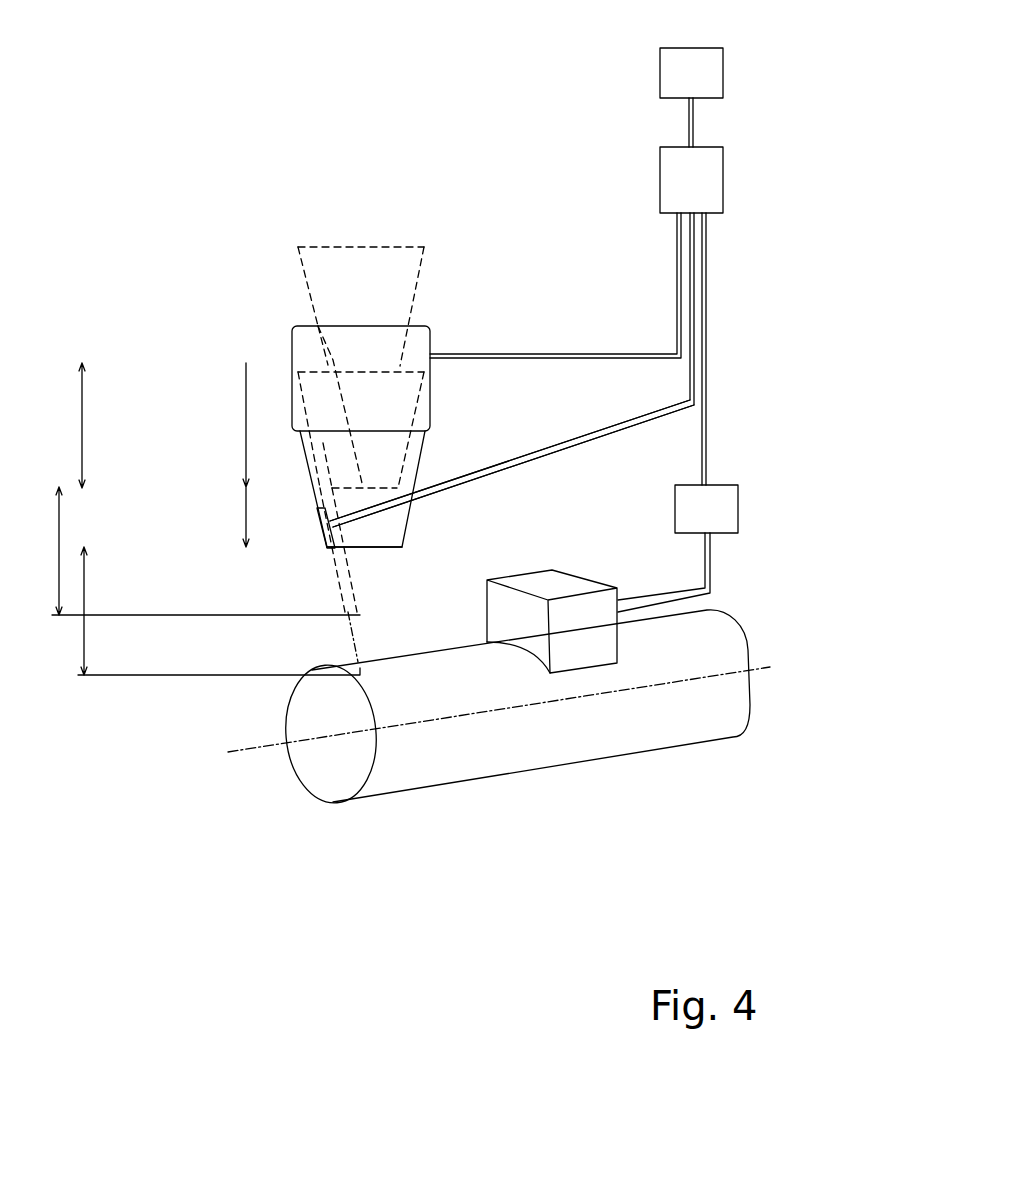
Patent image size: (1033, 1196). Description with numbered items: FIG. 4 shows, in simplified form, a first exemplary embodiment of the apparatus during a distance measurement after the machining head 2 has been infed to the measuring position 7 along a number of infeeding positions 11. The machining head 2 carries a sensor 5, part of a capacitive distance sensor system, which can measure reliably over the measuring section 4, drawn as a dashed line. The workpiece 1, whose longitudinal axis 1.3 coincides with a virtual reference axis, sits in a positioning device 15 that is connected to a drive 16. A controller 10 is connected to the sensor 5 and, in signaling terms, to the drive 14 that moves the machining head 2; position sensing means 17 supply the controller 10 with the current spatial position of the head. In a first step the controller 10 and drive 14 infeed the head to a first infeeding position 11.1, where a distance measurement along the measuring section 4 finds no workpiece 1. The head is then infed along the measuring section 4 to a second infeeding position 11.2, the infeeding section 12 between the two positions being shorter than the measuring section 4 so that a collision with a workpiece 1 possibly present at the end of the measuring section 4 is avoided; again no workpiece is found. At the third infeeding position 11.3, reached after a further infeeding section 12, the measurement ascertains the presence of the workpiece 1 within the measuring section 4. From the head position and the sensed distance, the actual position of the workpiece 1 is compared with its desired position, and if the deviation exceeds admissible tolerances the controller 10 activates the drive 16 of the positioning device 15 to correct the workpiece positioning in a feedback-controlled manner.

The workpiece 1 is at (382, 782).
The longitudinal axis 1.3 is at (252, 747).
The machining head 2 is at (407, 495).
The measuring section 4 is at (198, 519).
The sensor 5 is at (336, 537).
The measuring position 7 is at (411, 548).
The controller 10 is at (675, 160).
The infeeding positions 11 is at (158, 287).
The first infeeding position 11.1 is at (312, 366).
The second infeeding position 11.2 is at (330, 491).
The third infeeding position 11.3 is at (312, 550).
The infeeding section 12 is at (228, 455).
The drive 14 is at (422, 341).
The positioning device 15 is at (583, 645).
The drive 16 is at (682, 512).
The position sensing means 17 is at (675, 77).